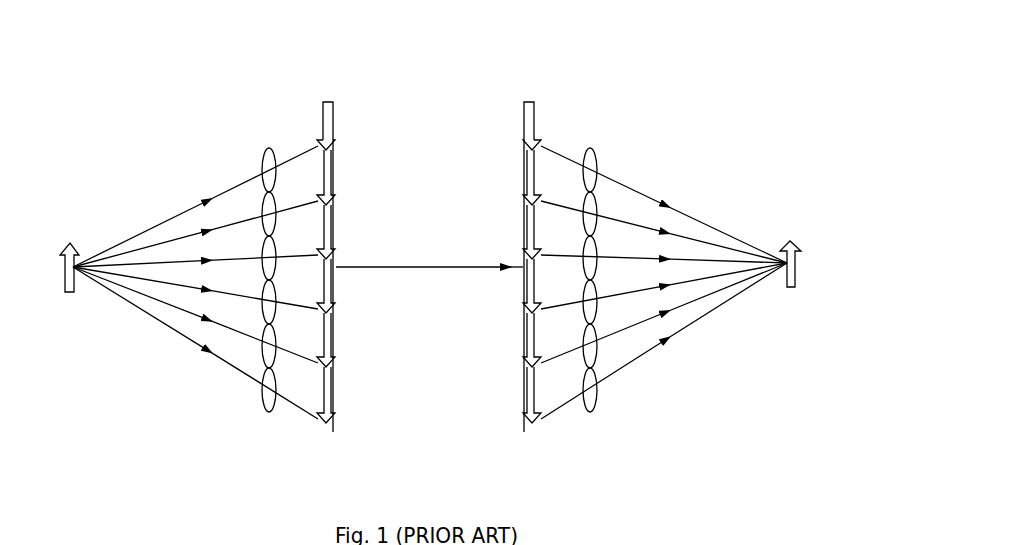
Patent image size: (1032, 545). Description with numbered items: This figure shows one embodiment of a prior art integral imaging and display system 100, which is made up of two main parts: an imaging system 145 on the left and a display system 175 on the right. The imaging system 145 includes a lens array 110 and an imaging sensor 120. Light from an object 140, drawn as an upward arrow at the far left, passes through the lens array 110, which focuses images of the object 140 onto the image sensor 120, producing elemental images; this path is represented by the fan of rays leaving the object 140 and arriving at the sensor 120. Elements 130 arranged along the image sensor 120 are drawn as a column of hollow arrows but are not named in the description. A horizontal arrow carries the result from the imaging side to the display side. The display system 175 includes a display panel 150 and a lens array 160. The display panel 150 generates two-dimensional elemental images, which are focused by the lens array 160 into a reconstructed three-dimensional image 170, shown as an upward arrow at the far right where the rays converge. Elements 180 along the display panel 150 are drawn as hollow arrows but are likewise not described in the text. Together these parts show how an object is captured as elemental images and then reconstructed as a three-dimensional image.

The integral imaging and display system 100 is at (447, 65).
The lens array 110 is at (262, 408).
The imaging sensor 120 is at (340, 105).
The light emitting elements 130 is at (315, 139).
The object 140 is at (60, 288).
The imaging system 145 is at (173, 367).
The display panel 150 is at (536, 435).
The lens array 160 is at (603, 407).
The reconstructed 3-D image 170 is at (803, 278).
The display system 175 is at (695, 368).
The light receiving elements 180 is at (543, 133).